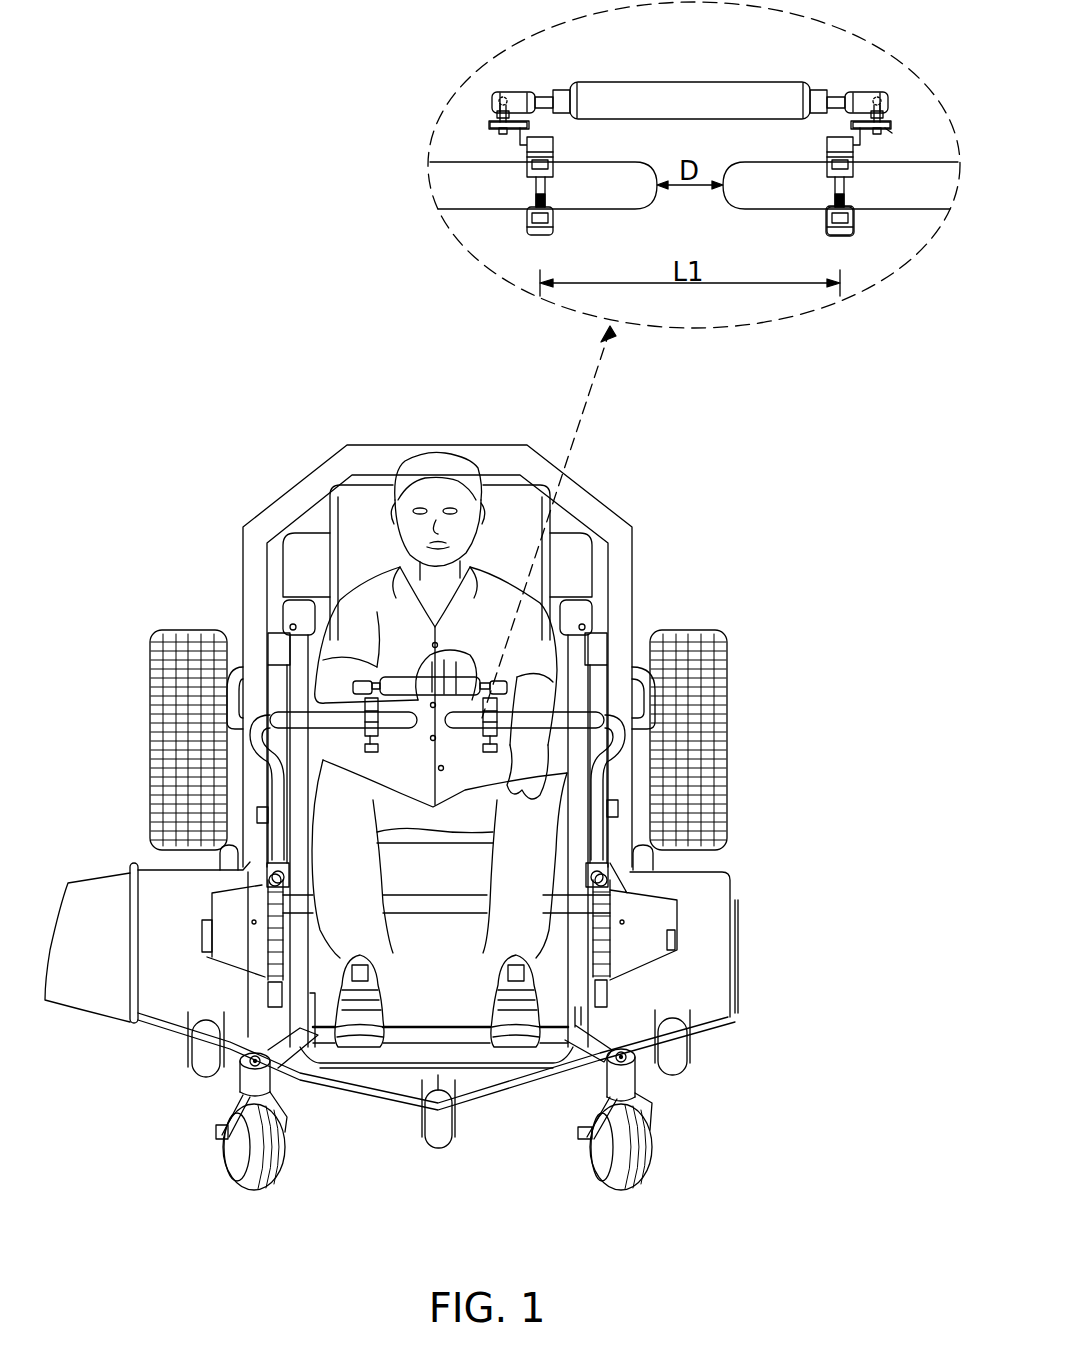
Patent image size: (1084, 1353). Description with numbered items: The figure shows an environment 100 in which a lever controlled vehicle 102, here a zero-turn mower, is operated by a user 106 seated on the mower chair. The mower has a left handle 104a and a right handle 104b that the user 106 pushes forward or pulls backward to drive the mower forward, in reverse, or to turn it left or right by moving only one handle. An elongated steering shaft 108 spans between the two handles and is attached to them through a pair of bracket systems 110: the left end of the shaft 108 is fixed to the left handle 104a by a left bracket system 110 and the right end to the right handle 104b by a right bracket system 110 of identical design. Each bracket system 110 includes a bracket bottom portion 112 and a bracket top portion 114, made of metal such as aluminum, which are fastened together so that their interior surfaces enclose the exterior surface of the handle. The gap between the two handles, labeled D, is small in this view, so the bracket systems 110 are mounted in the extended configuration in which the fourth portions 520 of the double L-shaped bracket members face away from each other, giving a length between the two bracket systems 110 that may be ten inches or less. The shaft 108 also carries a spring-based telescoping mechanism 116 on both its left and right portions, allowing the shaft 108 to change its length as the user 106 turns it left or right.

The environment 100 is at (391, 595).
The lever controlled vehicle 102 is at (253, 513).
The left handle 104a is at (601, 197).
The right handle 104b is at (781, 197).
The user 106 is at (430, 466).
The elongated steering shaft 108 is at (693, 96).
The bracket system 110 is at (476, 120).
The bracket bottom portion 112 is at (853, 235).
The bracket top portion 114 is at (833, 133).
The telescoping mechanism 116 is at (548, 92).
The fourth portion 520 is at (888, 131).